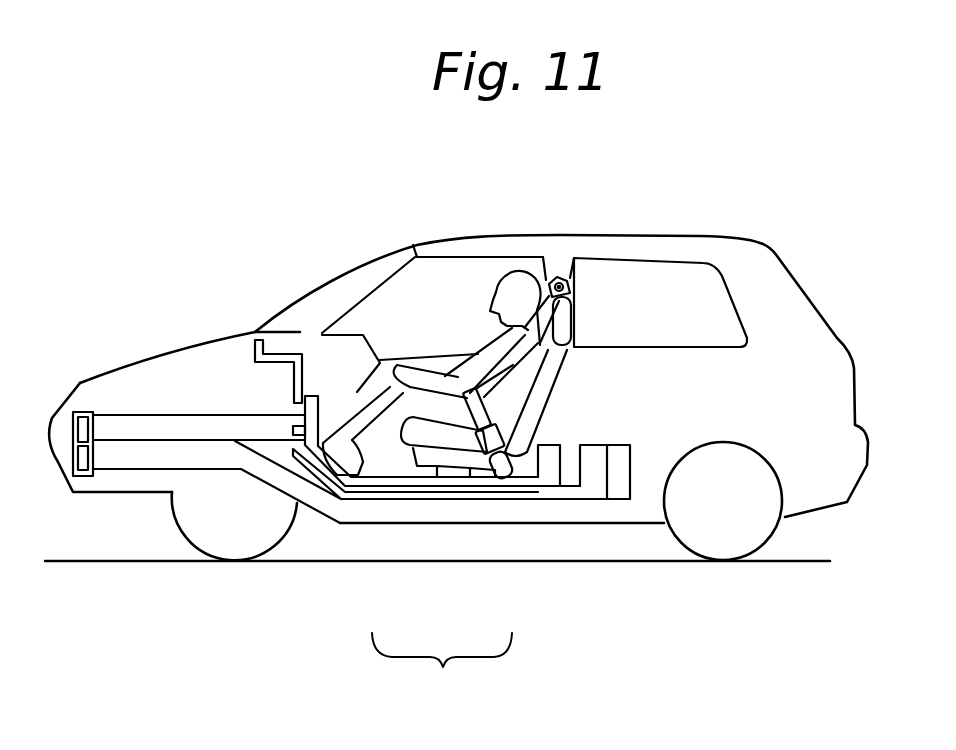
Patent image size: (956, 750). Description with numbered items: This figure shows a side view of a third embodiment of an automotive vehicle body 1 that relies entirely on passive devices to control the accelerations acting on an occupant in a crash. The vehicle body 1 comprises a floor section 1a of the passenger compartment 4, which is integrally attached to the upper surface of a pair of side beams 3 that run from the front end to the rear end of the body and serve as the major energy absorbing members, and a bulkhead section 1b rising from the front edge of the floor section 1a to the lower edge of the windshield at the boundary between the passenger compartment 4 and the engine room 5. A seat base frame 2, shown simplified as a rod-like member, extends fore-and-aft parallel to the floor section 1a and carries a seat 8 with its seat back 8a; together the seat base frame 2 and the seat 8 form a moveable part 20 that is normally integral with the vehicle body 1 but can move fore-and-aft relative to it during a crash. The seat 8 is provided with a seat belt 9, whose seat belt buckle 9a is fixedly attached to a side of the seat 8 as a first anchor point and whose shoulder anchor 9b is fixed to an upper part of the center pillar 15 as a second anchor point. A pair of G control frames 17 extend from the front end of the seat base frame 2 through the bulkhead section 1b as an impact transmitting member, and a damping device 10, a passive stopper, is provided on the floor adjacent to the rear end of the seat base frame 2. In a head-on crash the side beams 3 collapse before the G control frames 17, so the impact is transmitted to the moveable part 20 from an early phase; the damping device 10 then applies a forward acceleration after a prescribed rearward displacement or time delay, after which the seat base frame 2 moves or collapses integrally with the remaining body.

The vehicle body 1 is at (606, 532).
The floor section 1a is at (540, 499).
The bulkhead section 1b is at (317, 417).
The seat base frame 2 is at (392, 480).
The side beams 3 is at (147, 465).
The passenger compartment 4 is at (692, 334).
The engine room 5 is at (191, 400).
The seat 8 is at (465, 460).
The seat back 8a is at (553, 352).
The seat belt 9 is at (470, 402).
The seat belt buckle 9a is at (512, 448).
The shoulder anchor 9b is at (557, 277).
The damping device 10 is at (641, 436).
The center pillar 15 is at (574, 273).
The G control frames 17 is at (207, 428).
The moveable part 20 is at (442, 675).